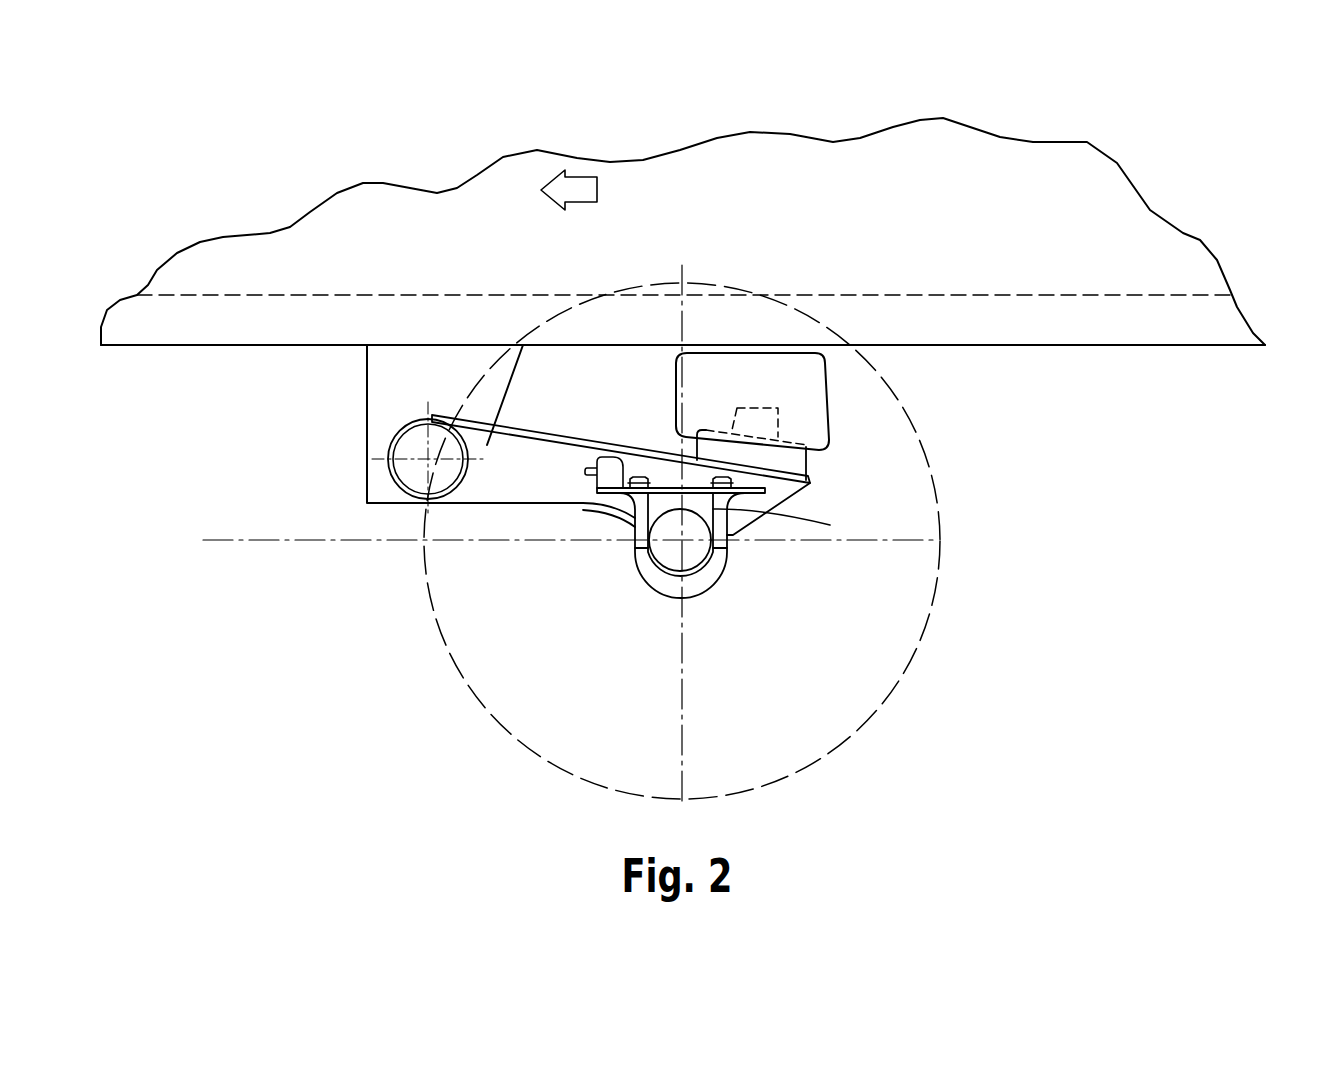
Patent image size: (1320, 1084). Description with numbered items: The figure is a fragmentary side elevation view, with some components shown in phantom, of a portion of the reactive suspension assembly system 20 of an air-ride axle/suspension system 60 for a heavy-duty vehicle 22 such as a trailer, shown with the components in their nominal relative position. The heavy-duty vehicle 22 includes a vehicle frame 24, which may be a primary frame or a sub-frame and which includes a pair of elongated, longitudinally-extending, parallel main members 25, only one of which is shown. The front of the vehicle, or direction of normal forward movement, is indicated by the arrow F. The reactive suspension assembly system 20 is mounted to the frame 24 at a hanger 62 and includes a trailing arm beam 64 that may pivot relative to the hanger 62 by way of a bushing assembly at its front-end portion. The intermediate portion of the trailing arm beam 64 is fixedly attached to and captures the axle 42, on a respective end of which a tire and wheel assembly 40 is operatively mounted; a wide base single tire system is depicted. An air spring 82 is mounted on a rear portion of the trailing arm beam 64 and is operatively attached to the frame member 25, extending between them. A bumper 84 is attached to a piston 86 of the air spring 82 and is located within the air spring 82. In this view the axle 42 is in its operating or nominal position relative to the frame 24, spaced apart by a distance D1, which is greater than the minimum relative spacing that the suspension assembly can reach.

The reactive suspension assembly system 20 is at (502, 565).
The heavy-duty vehicle 22 is at (1058, 238).
The vehicle frame 24 is at (1163, 291).
The main member 25 is at (1208, 322).
The tire and wheel assembly 40 is at (913, 645).
The axle 42 is at (735, 512).
The air-ride axle/suspension system 60 is at (842, 437).
The hanger 62 is at (385, 372).
The trailing arm beam 64 is at (510, 480).
The air spring 82 is at (812, 385).
The bumper 84 is at (760, 426).
The piston 86 is at (790, 465).
The arrow F is at (577, 176).
The distance D1 is at (223, 346).